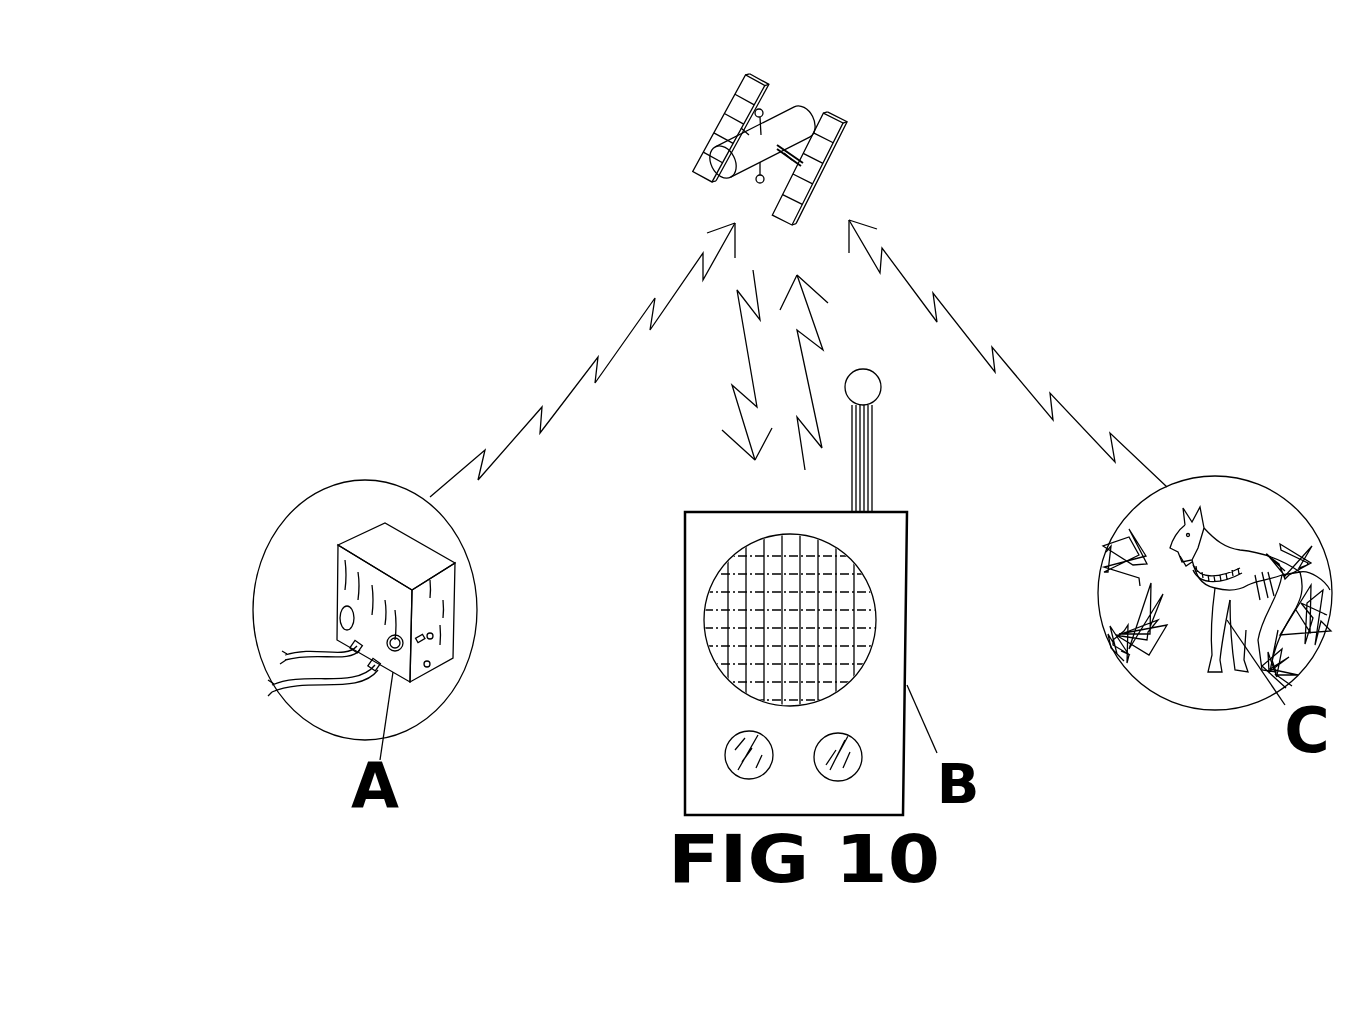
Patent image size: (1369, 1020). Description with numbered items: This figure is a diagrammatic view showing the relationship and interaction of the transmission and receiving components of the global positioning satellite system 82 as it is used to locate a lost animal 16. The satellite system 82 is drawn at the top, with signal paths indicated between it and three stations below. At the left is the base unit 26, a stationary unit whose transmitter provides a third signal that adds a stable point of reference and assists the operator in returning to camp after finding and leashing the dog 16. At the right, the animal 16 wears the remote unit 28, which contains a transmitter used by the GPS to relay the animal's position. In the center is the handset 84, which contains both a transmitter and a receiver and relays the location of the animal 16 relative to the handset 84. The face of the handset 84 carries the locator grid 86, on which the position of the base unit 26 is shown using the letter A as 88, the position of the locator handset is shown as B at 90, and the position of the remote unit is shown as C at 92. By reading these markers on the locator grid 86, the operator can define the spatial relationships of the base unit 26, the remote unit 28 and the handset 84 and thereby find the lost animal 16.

The global positioning satellite system 82 is at (773, 160).
The handset 84 is at (685, 798).
The locator grid 86 is at (877, 608).
The letter A 88 is at (768, 653).
The locator handset position B 90 is at (787, 590).
The remote unit position C 92 is at (822, 552).
The base unit 26 is at (365, 527).
The animal 16 is at (1215, 533).
The remote unit 28 is at (1195, 585).